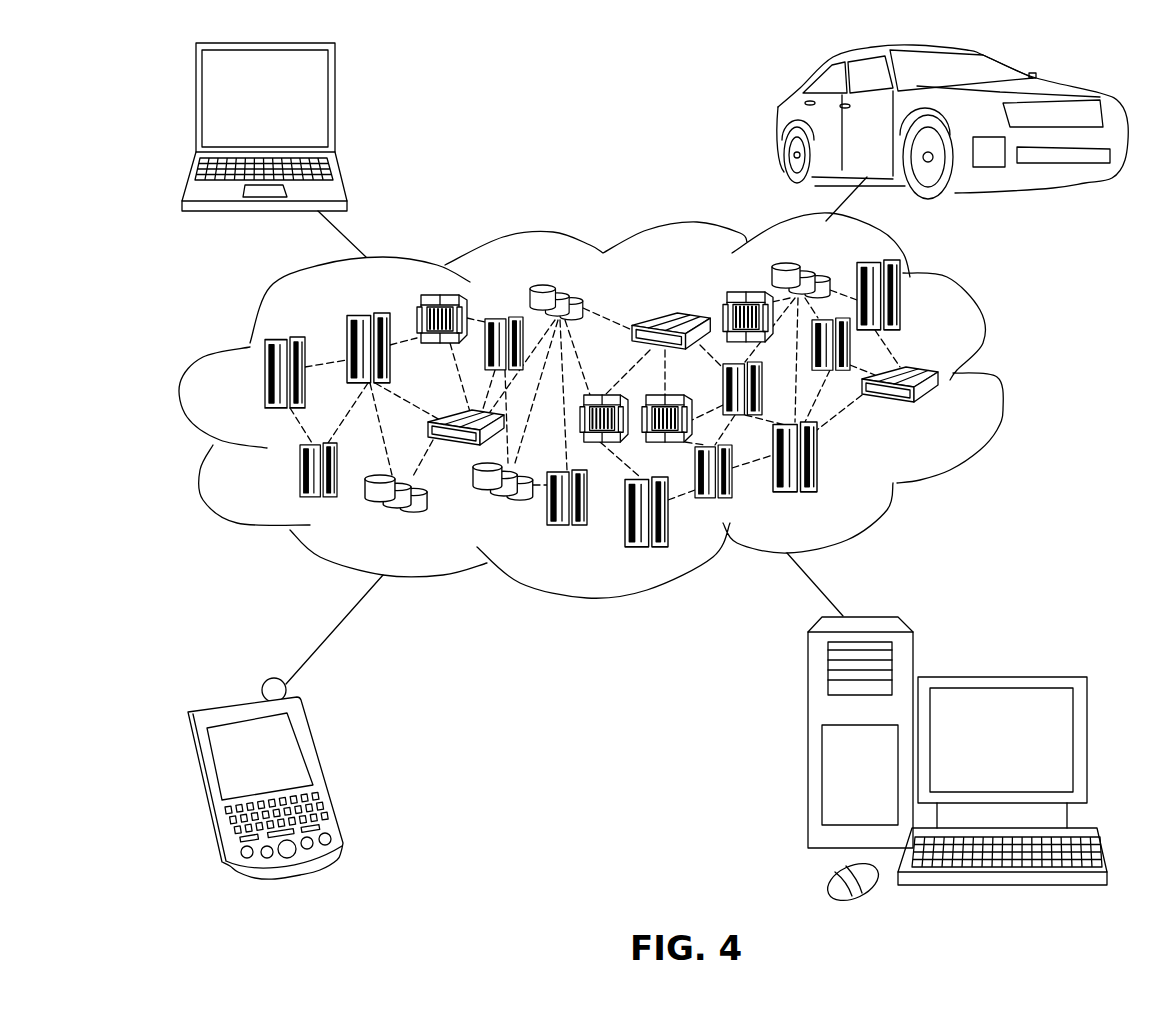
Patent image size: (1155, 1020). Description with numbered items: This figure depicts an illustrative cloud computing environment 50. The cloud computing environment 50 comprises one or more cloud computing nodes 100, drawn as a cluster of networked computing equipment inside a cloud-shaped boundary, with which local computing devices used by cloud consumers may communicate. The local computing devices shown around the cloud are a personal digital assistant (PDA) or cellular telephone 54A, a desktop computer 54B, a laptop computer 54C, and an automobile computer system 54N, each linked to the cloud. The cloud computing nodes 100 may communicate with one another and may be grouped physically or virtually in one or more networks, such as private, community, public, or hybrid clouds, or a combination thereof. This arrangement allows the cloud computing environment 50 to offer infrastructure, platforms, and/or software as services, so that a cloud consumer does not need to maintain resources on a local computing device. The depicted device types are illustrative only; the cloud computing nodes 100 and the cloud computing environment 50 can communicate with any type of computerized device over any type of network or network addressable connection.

The cloud computing nodes 100 is at (653, 475).
The cloud computing environment 50 is at (1000, 382).
The personal digital assistant (PDA) or cellular telephone 54A is at (324, 770).
The desktop computer 54B is at (997, 675).
The laptop computer 54C is at (336, 104).
The automobile computer system 54N is at (778, 121).